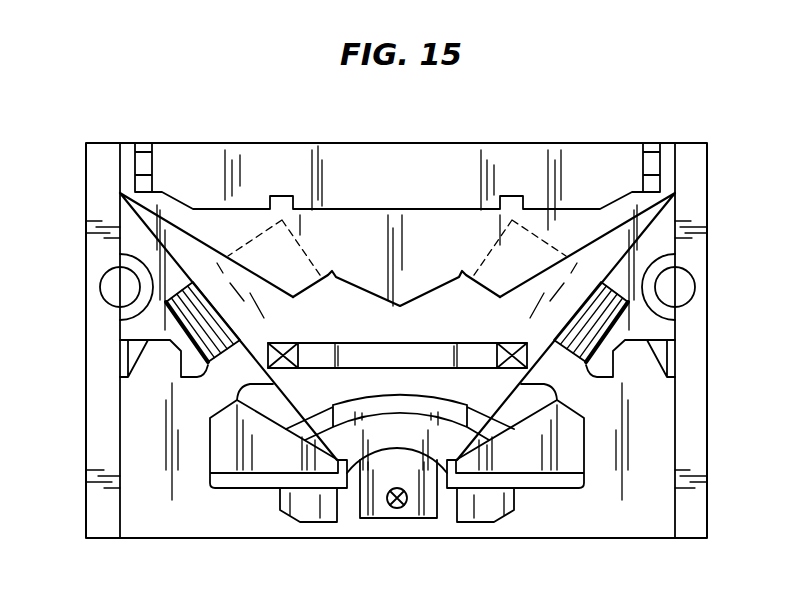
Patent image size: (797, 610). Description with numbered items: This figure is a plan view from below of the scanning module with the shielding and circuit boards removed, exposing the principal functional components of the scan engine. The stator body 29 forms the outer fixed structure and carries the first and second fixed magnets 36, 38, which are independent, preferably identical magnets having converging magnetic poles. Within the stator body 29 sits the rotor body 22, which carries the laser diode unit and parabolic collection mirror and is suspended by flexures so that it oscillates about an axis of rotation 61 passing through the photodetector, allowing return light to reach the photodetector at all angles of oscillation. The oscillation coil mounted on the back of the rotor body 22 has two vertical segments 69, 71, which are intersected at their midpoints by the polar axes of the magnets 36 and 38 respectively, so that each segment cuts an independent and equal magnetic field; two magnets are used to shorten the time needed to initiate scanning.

The rotor body 22 is at (524, 452).
The stator body 29 is at (431, 238).
The first fixed magnet 36 is at (222, 303).
The second fixed magnet 38 is at (633, 300).
The axis of rotation 61 is at (397, 509).
The vertical segment of the coil 69 is at (282, 366).
The vertical segment of the coil 71 is at (529, 361).